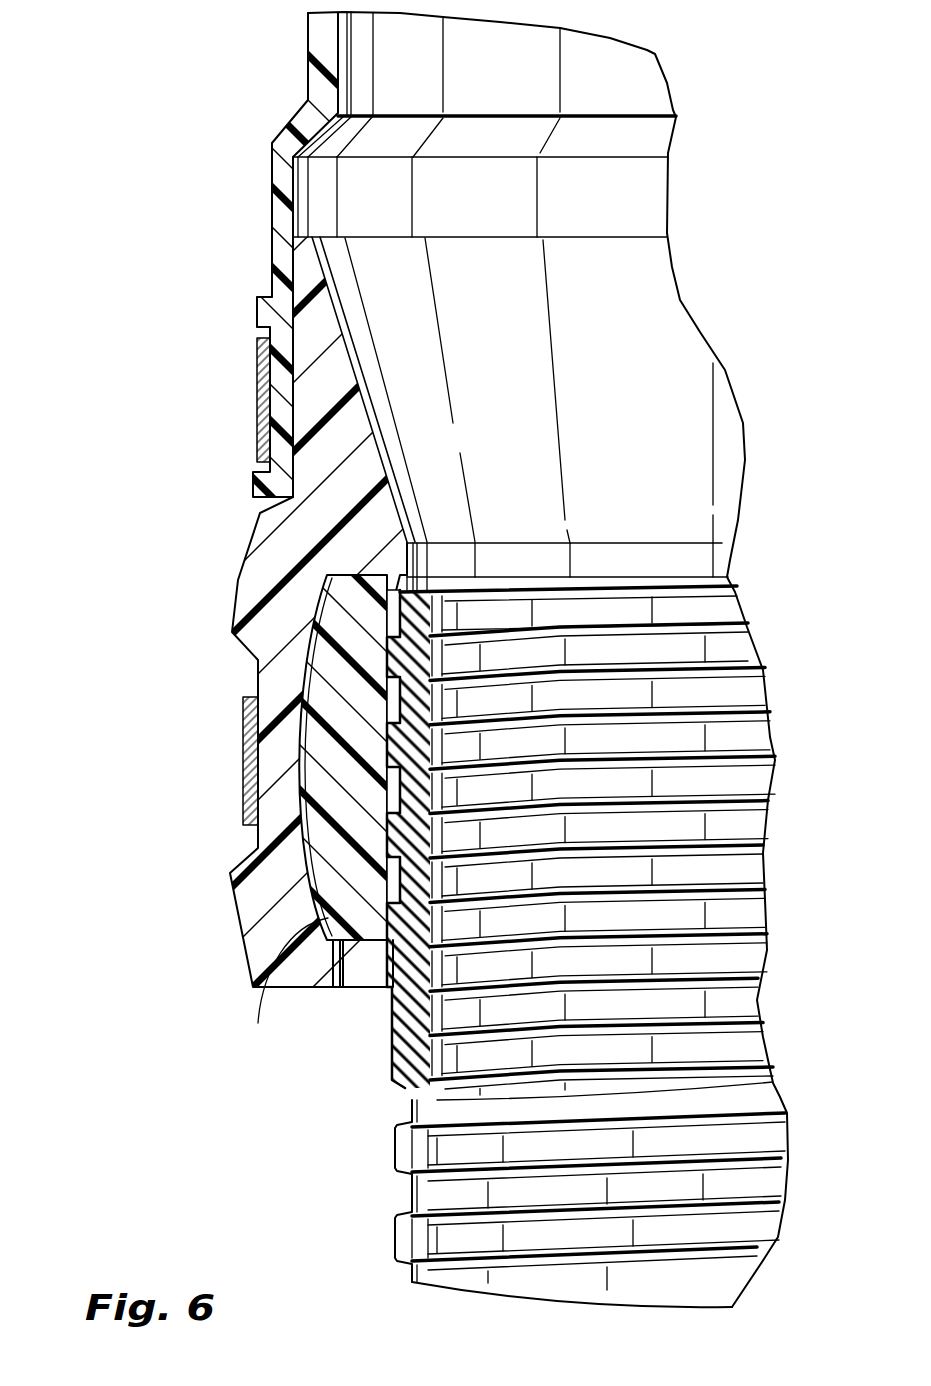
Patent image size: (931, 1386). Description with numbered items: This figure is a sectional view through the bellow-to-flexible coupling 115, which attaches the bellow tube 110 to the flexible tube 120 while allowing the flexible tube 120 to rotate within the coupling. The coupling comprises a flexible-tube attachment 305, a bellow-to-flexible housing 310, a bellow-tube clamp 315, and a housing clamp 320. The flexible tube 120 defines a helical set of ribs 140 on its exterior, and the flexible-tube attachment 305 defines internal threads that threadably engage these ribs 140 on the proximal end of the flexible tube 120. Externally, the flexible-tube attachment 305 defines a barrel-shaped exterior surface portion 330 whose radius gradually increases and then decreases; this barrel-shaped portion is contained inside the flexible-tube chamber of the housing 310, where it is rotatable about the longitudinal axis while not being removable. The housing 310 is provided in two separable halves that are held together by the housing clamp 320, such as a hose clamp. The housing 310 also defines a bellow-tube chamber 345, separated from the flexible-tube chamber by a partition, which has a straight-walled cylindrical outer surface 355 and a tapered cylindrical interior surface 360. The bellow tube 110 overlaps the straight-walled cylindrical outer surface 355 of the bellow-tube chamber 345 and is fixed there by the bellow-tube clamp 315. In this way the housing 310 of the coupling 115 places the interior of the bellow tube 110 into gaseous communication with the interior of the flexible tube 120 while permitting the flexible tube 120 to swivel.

The bellow-to-flexible coupling 115 is at (150, 193).
The bellow tube 110 is at (289, 128).
The straight-walled cylindrical outer surface 355 is at (270, 293).
The bellow-tube clamp 315 is at (258, 405).
The tapered cylindrical interior surface 360 is at (353, 367).
The bellow-tube chamber 345 is at (640, 398).
The bellow-to-flexible housing 310 is at (236, 585).
The housing clamp 320 is at (238, 765).
The flexible-tube attachment 305 is at (366, 776).
The barrel-shaped exterior surface portion 330 is at (270, 983).
The helical set of ribs 140 is at (395, 1063).
The flexible tube 120 is at (383, 1120).